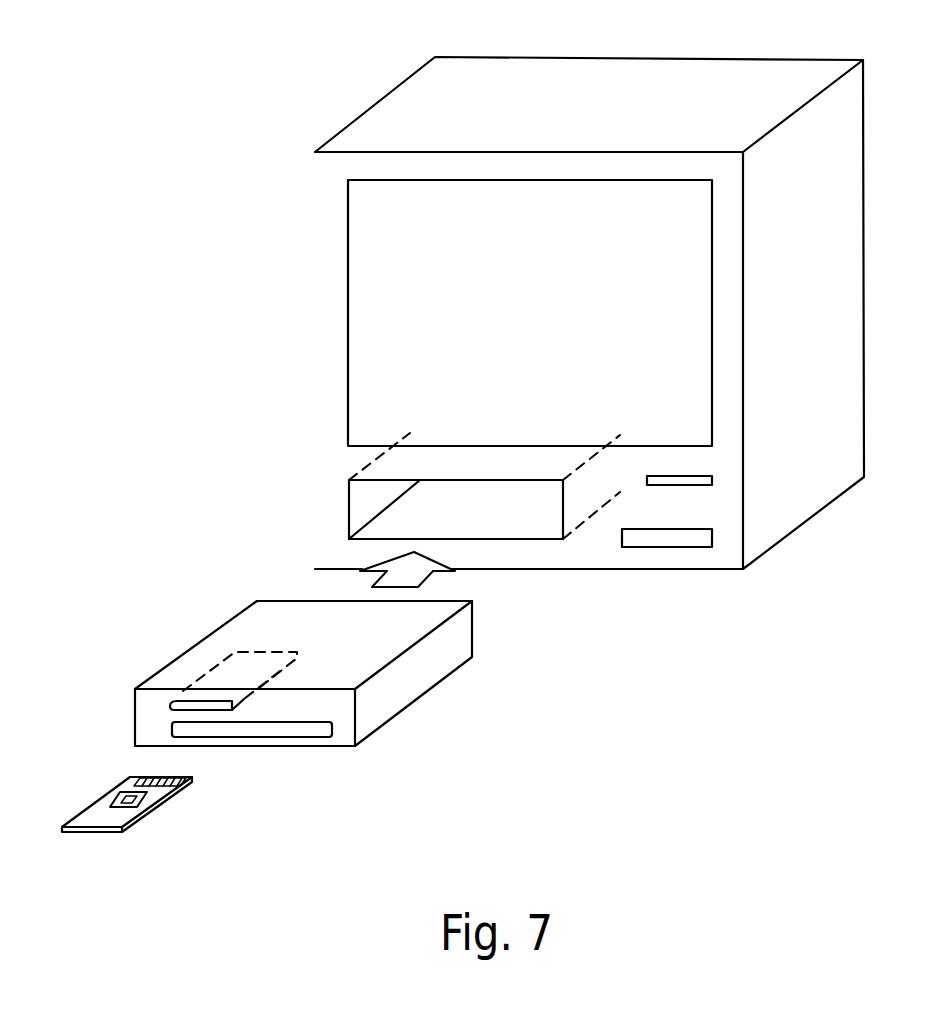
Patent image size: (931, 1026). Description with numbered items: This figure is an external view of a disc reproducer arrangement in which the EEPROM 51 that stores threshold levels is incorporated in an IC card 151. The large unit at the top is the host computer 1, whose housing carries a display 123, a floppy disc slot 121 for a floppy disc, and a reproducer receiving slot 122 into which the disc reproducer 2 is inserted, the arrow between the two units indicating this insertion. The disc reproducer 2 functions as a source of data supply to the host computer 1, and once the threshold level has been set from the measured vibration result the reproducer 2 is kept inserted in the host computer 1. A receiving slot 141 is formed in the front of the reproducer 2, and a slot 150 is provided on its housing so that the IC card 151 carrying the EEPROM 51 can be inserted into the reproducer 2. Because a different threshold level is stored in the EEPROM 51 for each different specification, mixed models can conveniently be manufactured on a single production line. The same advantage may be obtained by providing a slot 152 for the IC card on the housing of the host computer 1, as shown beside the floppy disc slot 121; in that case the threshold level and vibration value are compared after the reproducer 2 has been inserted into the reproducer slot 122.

The host computer 1 is at (612, 92).
The disc reproducer 2 is at (403, 688).
The EEPROM 51 is at (125, 800).
The floppy disc slot 121 is at (652, 550).
The reproducer receiving slot 122 is at (368, 498).
The display 123 is at (382, 293).
The receiving slot 141 is at (295, 733).
The receiving slot 150 is at (168, 707).
The IC card 151 is at (85, 835).
The receiving slot 152 is at (705, 485).